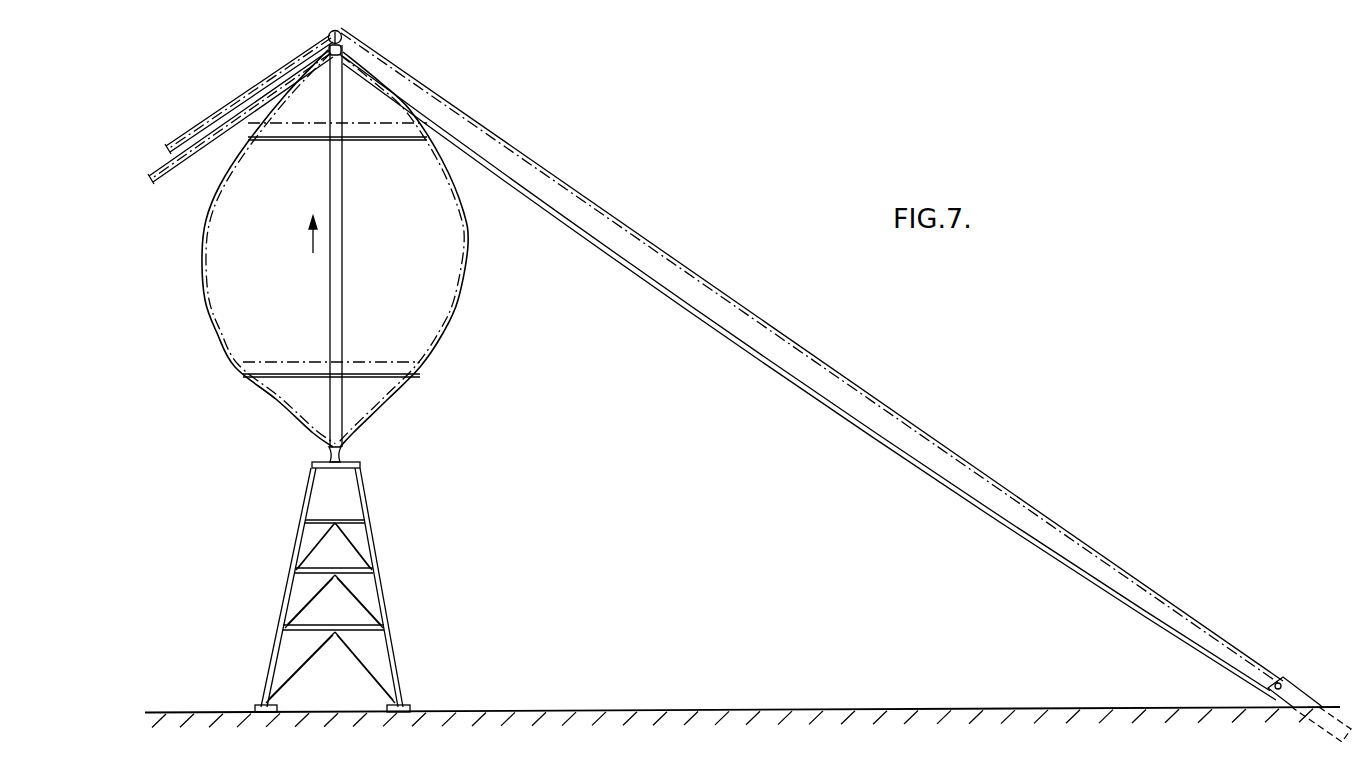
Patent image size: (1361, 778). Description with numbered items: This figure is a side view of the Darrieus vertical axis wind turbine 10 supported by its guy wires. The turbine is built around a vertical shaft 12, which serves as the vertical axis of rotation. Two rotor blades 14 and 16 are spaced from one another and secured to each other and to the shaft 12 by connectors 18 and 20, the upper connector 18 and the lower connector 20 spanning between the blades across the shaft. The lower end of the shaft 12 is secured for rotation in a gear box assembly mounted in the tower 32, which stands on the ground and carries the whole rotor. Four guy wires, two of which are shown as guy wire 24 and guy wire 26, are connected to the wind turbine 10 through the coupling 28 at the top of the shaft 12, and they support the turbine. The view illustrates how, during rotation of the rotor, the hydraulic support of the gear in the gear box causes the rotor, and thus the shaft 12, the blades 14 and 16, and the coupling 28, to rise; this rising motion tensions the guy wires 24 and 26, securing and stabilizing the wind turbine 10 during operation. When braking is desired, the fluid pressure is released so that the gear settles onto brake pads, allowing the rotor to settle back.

The vertical axis wind turbine 10 is at (479, 376).
The shaft 12 is at (343, 272).
The blade 14 is at (450, 323).
The blade 16 is at (223, 345).
The connector 18 is at (400, 140).
The connector 20 is at (286, 377).
The guy wire 24 is at (606, 253).
The guy wire 26 is at (156, 173).
The coupling 28 is at (347, 36).
The tower 32 is at (376, 540).